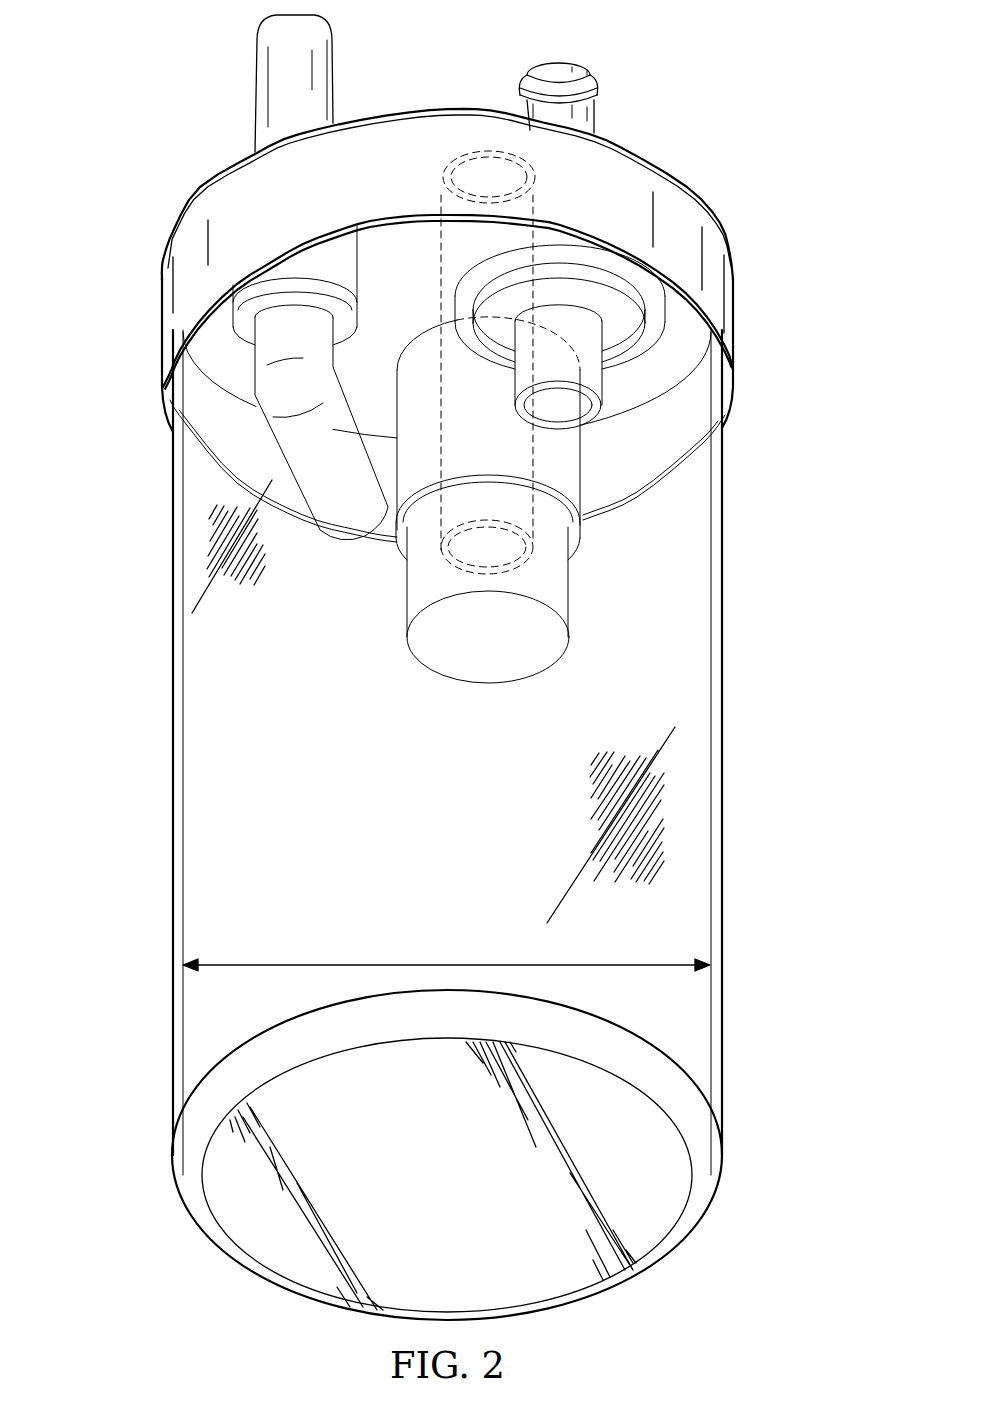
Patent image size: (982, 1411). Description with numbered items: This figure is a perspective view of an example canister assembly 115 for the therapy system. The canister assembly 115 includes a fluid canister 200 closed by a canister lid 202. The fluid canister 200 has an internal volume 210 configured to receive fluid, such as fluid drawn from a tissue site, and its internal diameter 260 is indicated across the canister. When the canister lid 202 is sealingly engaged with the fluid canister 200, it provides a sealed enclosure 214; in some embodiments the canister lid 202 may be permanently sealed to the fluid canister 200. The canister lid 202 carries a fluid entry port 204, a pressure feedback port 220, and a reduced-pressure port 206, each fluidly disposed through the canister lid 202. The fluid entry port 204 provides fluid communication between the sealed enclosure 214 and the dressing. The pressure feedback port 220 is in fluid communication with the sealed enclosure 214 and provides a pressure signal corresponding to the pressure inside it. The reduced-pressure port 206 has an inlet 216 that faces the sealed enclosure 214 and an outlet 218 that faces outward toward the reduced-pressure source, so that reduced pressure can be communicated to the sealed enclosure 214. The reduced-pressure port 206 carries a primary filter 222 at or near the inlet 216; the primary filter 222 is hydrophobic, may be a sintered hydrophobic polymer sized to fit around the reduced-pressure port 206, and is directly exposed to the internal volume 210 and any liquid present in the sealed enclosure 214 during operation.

The canister assembly 115 is at (120, 78).
The fluid canister 200 is at (722, 771).
The canister lid 202 is at (688, 193).
The fluid entry port 204 is at (257, 90).
The reduced-pressure port 206 is at (538, 206).
The internal volume 210 is at (468, 810).
The sealed enclosure 214 is at (700, 713).
The inlet 216 is at (458, 542).
The outlet 218 is at (482, 151).
The pressure feedback port 220 is at (560, 63).
The primary filter 222 is at (570, 578).
The internal diameter 260 is at (452, 963).